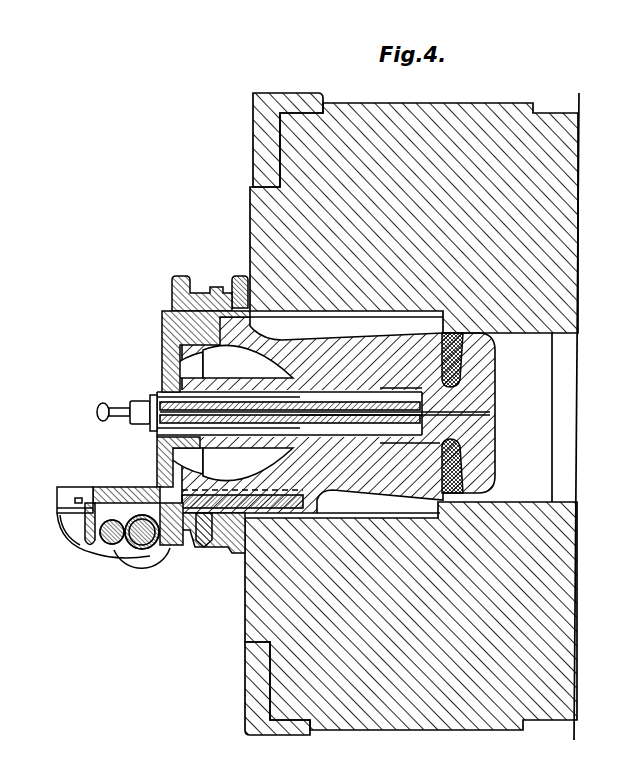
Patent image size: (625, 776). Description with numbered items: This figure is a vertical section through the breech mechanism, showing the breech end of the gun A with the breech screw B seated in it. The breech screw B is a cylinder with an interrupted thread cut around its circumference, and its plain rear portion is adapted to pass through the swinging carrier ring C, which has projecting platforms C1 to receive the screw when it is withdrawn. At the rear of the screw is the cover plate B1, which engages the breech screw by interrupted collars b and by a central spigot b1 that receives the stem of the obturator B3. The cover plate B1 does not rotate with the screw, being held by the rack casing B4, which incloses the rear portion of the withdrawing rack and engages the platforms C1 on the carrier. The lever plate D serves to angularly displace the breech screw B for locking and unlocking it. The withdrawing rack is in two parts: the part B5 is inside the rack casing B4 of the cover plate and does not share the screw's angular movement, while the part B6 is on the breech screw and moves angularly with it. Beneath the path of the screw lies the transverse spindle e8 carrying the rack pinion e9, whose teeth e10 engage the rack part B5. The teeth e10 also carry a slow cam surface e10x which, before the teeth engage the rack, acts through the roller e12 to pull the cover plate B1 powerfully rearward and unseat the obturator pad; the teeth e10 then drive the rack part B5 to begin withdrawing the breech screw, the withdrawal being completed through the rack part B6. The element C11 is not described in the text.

The breech end of the gun A is at (412, 416).
The breech screw B is at (328, 401).
The cover plate B1 is at (172, 342).
The obturator B3 is at (477, 406).
The rack casing B4 is at (112, 485).
The rack part B5 is at (78, 487).
The rack part B6 is at (292, 520).
The swinging carrier ring C is at (180, 284).
The platform C1 is at (67, 528).
The pawl C11 is at (150, 500).
The lever plate D is at (238, 300).
The interrupted collars b is at (193, 347).
The central spigot b1 is at (238, 358).
The spindle e8 is at (120, 546).
The rack pinion e9 is at (110, 496).
The teeth of rack pinion e10 is at (144, 556).
The slow cam surface e10x is at (164, 548).
The roller e12 is at (100, 540).